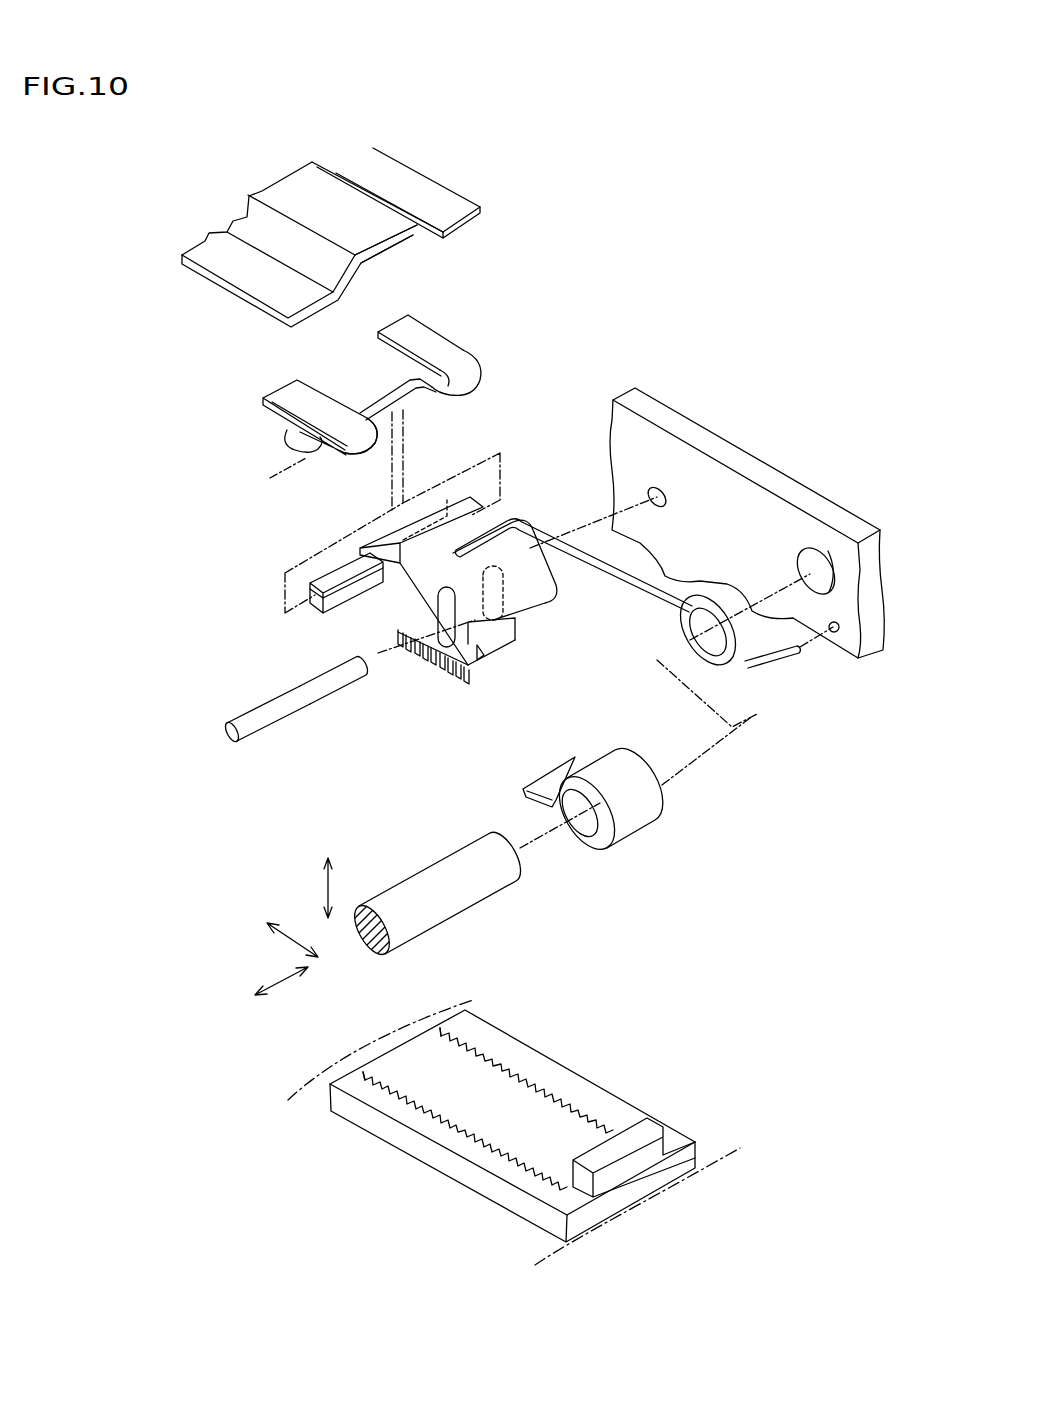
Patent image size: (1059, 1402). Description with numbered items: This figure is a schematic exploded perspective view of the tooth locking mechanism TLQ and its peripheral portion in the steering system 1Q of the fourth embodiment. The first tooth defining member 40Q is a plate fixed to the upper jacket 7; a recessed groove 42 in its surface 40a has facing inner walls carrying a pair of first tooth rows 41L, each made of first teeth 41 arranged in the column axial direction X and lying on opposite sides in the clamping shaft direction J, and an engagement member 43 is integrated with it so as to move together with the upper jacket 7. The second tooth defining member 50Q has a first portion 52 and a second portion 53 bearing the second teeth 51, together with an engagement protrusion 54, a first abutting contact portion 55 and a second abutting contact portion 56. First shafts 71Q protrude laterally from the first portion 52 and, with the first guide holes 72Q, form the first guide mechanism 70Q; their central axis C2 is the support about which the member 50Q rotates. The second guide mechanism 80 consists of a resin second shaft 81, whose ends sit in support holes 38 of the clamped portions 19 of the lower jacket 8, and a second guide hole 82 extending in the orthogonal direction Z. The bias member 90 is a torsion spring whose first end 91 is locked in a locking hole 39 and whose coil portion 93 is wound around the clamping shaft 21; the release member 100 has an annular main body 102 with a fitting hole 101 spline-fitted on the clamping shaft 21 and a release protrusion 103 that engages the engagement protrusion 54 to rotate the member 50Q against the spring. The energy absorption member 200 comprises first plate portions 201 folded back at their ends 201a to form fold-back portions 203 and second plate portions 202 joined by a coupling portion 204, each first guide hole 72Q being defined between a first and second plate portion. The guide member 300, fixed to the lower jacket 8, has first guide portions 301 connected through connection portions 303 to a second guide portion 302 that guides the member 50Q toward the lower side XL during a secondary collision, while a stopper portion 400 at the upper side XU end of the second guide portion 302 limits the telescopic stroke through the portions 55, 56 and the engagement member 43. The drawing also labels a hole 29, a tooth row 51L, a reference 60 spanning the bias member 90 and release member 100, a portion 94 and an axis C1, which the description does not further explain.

The steering system 1Q is at (693, 390).
The upper jacket 7 is at (305, 1075).
The lower jacket 8 is at (747, 531).
The clamped portions 19 is at (782, 473).
The clamping shaft 21 is at (425, 882).
The hole 29 is at (808, 563).
The support holes 38 is at (650, 494).
The locking hole 39 is at (833, 633).
The first tooth defining member 40Q is at (512, 1102).
The surface 40a is at (482, 1035).
The first teeth 41 is at (613, 1130).
The first tooth rows 41L is at (438, 1026).
The recessed groove 42 is at (552, 1128).
The engagement member 43 is at (650, 1133).
The second tooth defining member 50Q is at (433, 603).
The second teeth 51 is at (496, 633).
The tooth row 51L is at (513, 652).
The first portion 52 is at (368, 600).
The second portion 53 is at (497, 663).
The engagement protrusion 54 is at (550, 603).
The first abutting contact portion 55 is at (510, 665).
The second abutting contact portion 56 is at (413, 540).
The biasing unit 60 is at (633, 707).
The first guide mechanism 70Q is at (428, 479).
The first shafts 71Q is at (510, 478).
The first guide holes 72Q is at (487, 378).
The second guide mechanism 80 is at (312, 729).
The second shaft 81 is at (312, 693).
The second guide hole 82 is at (402, 655).
The bias member 90 is at (633, 622).
The first end 91 is at (791, 655).
The coil portion 93 is at (707, 665).
The spring hook slot 94 is at (448, 570).
The release member 100 is at (563, 796).
The fitting hole 101 is at (590, 822).
The main body 102 is at (633, 817).
The release protrusion 103 is at (543, 787).
The energy absorption member 200 is at (381, 384).
The first plate portions 201 is at (392, 332).
The another end 201a is at (462, 352).
The second plate portions 202 is at (449, 355).
The fold-back portion 203 is at (462, 385).
The coupling portion 204 is at (355, 398).
The guide member 300 is at (323, 219).
The first guide portions 301 is at (203, 254).
The second guide portion 302 is at (293, 195).
The connection portions 303 is at (241, 222).
The stopper portion 400 is at (393, 235).
The axis C1 is at (521, 842).
The central axis C2 is at (262, 462).
The tooth locking mechanism TLQ is at (678, 790).
The orthogonal direction Z is at (334, 888).
The column axial direction X is at (300, 936).
The lower side XL is at (239, 920).
The upper side XU is at (340, 962).
The clamping shaft direction J is at (283, 979).